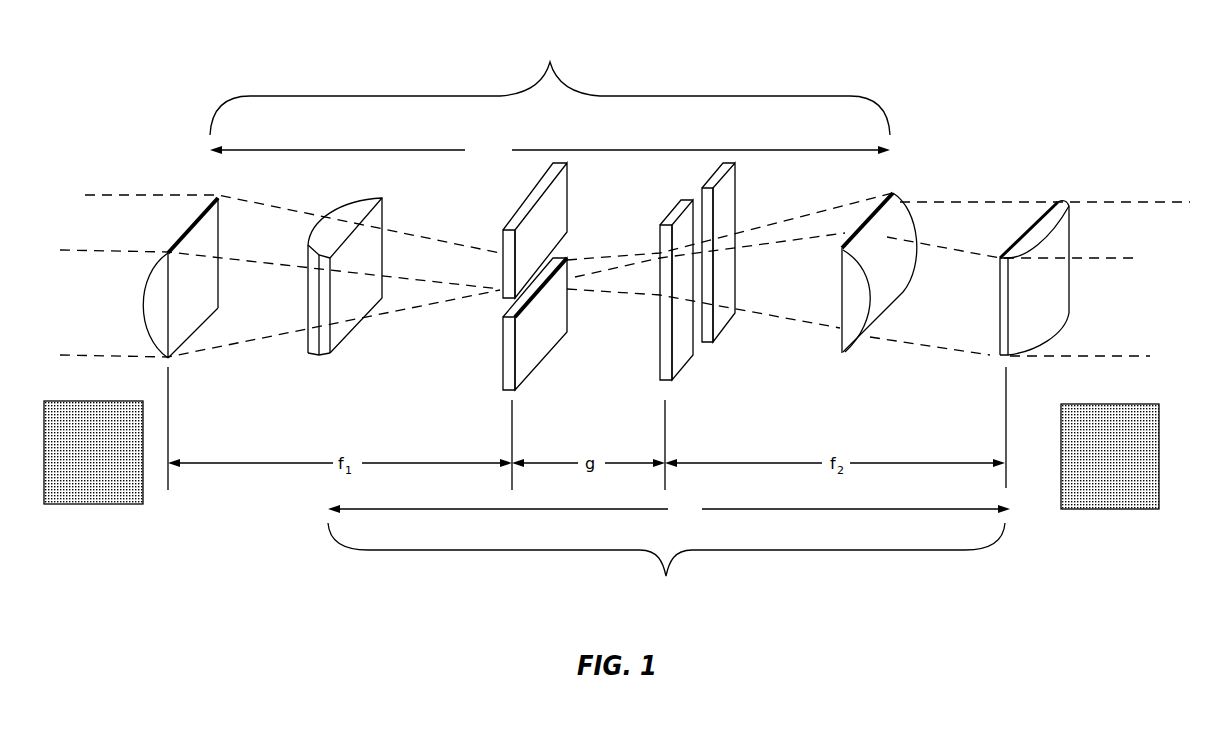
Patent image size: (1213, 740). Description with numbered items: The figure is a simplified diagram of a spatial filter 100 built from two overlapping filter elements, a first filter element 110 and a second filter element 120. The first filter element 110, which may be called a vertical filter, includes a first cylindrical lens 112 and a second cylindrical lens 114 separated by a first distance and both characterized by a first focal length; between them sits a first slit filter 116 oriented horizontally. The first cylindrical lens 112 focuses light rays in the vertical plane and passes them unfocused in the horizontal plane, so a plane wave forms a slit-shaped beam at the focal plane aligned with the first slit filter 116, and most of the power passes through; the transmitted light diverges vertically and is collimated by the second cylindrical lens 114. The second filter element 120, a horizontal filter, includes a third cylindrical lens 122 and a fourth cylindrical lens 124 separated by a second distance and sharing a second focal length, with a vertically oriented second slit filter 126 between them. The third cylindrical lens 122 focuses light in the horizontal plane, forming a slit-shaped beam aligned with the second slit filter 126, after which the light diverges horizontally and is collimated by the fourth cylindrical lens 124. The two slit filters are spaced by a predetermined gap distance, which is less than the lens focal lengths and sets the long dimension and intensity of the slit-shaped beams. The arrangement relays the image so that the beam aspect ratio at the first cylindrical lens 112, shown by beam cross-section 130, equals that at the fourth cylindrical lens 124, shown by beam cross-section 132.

The spatial filter 100 is at (1016, 76).
The first filter element 110 is at (550, 97).
The first cylindrical lens 112 is at (192, 318).
The second cylindrical lens 114 is at (852, 317).
The first slit filter 116 is at (530, 350).
The second filter element 120 is at (669, 558).
The third cylindrical lens 122 is at (347, 307).
The fourth cylindrical lens 124 is at (1028, 317).
The second slit filter 126 is at (682, 352).
The beam cross-section 130 is at (110, 487).
The beam cross-section 132 is at (1097, 487).